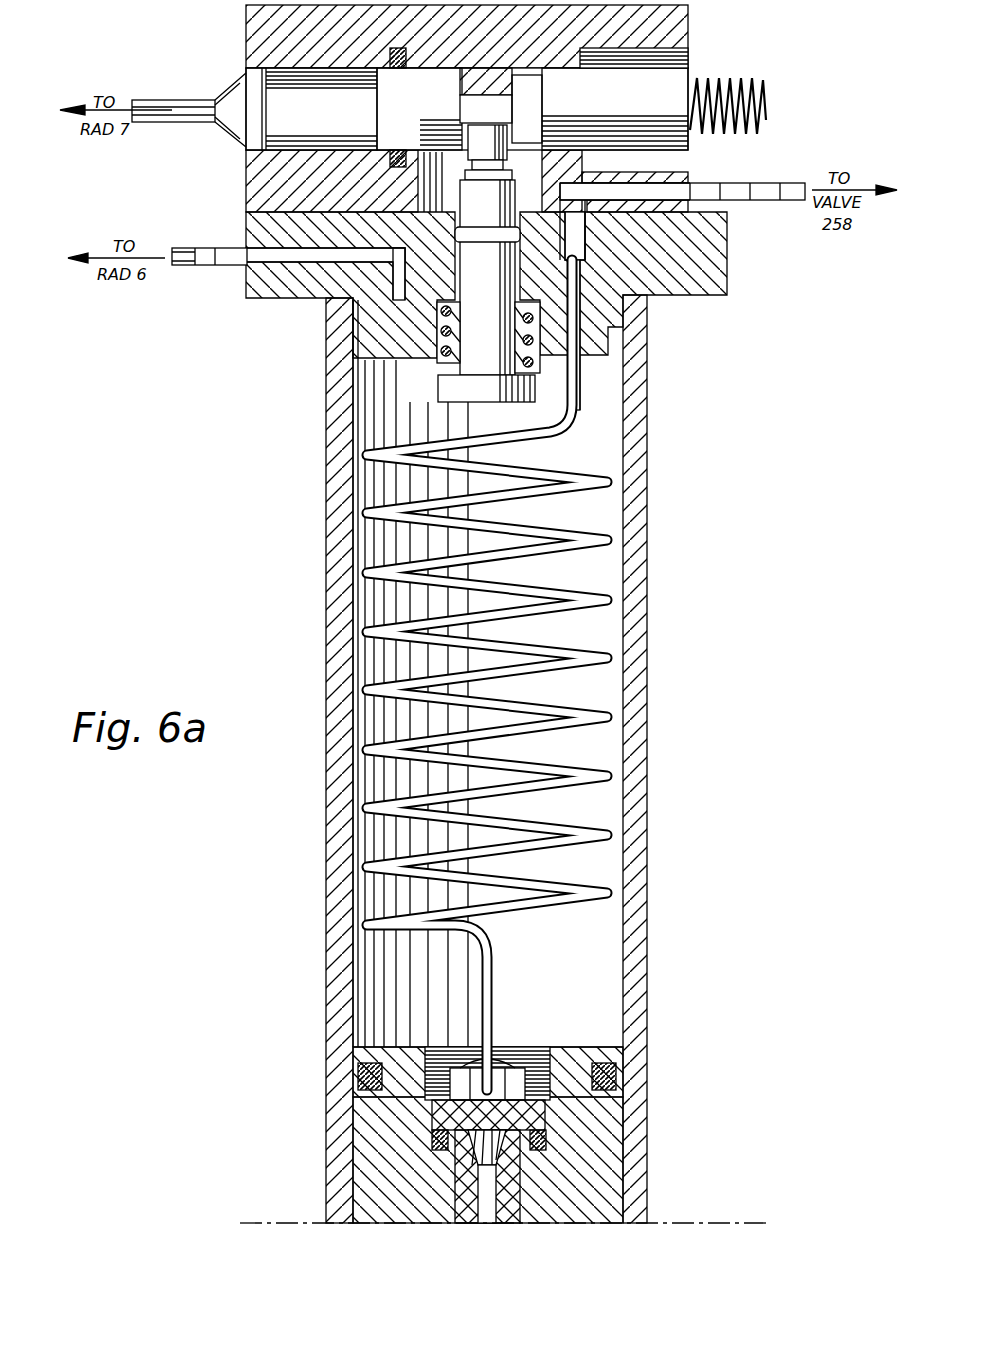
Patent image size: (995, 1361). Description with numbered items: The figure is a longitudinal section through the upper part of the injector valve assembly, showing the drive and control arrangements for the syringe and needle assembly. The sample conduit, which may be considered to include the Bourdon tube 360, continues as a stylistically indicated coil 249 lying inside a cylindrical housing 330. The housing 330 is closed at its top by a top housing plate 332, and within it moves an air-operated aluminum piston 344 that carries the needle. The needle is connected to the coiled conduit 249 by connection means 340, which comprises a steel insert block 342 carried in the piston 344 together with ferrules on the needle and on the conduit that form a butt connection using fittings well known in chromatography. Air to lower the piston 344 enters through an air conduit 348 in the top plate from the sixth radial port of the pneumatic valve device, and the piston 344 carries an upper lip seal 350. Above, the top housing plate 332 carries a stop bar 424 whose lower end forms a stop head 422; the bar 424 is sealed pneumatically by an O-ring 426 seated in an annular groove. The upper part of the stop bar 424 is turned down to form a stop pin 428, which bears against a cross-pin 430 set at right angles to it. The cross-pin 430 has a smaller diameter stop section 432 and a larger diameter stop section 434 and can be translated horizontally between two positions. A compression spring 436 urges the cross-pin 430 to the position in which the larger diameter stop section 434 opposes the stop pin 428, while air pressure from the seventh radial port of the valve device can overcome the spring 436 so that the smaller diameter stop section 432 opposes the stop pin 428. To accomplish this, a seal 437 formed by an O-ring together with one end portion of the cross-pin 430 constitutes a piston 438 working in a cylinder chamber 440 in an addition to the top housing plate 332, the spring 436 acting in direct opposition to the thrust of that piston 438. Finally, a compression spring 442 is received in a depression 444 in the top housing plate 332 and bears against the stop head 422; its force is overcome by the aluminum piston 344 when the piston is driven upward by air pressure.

The coil 249 is at (385, 510).
The cylindrical housing 330 is at (340, 575).
The top housing plate 332 is at (728, 265).
The connection means 340 is at (420, 1190).
The steel insert block 342 is at (530, 1190).
The aluminum piston 344 is at (360, 1147).
The air conduit 348 is at (335, 258).
The upper lip seal 350 is at (612, 1075).
The Bourdon tube 360 is at (457, 263).
The stop head 422 is at (445, 395).
The stop bar 424 is at (472, 277).
The O-ring 426 is at (455, 236).
The stop pin 428 is at (620, 50).
The cross-pin 430 is at (655, 75).
The smaller diameter stop section 432 is at (490, 100).
The larger diameter stop section 434 is at (530, 85).
The compression spring 436 is at (765, 100).
The seal 437 is at (397, 55).
The piston 438 is at (377, 127).
The cylinder chamber 440 is at (290, 68).
The compression spring 442 is at (442, 357).
The depression 444 is at (540, 335).